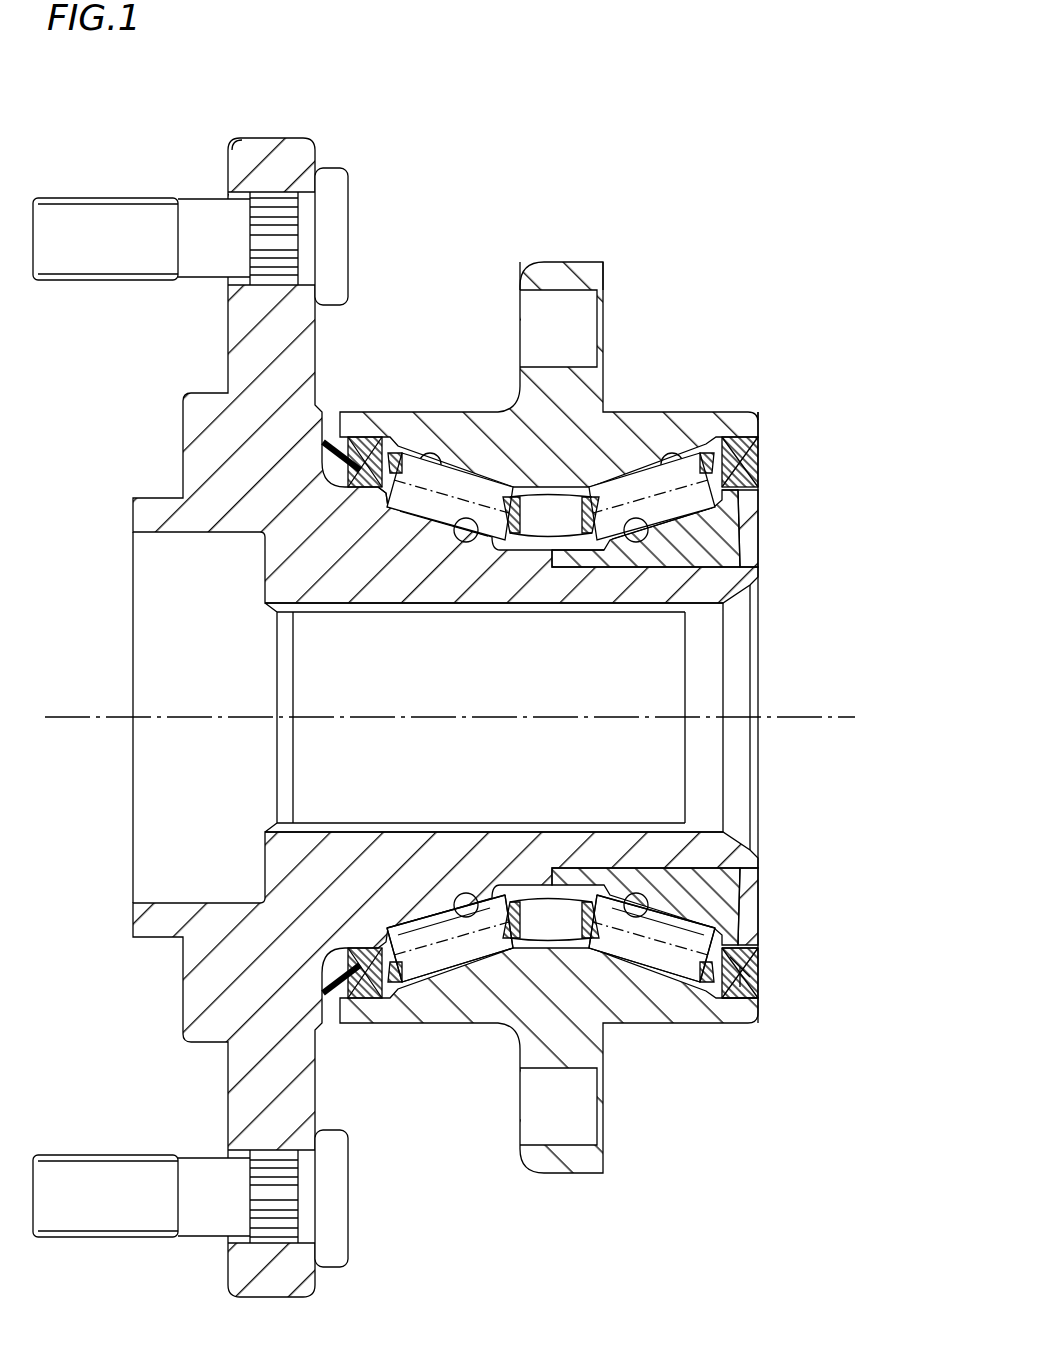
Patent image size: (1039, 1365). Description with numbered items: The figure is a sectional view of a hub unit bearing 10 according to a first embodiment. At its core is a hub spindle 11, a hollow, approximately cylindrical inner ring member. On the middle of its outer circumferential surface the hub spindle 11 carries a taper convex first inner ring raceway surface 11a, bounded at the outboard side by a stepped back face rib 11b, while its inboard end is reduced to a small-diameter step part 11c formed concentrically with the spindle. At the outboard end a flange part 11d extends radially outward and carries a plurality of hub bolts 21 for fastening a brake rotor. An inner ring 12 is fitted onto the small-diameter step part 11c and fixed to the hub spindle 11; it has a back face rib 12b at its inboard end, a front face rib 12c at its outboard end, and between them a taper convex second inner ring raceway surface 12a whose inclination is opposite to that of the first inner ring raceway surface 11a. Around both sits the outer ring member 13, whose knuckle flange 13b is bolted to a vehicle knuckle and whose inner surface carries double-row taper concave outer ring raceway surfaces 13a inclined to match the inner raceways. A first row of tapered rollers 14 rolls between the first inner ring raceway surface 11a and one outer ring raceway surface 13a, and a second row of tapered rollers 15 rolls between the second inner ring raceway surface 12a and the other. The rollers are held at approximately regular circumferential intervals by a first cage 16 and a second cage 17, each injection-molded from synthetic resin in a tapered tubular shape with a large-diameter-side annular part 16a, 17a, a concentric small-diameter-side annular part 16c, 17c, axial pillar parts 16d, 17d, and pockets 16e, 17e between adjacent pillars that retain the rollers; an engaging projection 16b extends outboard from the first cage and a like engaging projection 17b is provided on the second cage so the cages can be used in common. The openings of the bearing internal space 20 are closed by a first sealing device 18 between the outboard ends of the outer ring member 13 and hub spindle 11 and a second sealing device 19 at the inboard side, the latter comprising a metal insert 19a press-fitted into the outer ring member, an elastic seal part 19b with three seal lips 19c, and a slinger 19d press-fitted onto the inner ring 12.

The hub unit bearing 10 is at (766, 125).
The hub spindle 11 is at (178, 418).
The first inner ring raceway surface 11a is at (455, 550).
The back face rib 11b is at (370, 515).
The small-diameter step part 11c is at (742, 545).
The flange part 11d is at (260, 155).
The inner ring 12 is at (668, 580).
The second inner ring raceway surface 12a is at (634, 540).
The back face rib 12b is at (724, 495).
The front face rib 12c is at (578, 556).
The outer ring member 13 is at (563, 252).
The outer ring raceway surfaces 13a is at (428, 455).
The knuckle flange 13b is at (578, 262).
The first row of tapered rollers 14 is at (468, 490).
The second row of tapered rollers 15 is at (636, 490).
The first cage 16 is at (440, 985).
The large-diameter-side annular part 16a is at (430, 968).
The engaging projection 16b is at (388, 962).
The small-diameter-side annular part 16c is at (500, 882).
The pillar parts 16d is at (476, 988).
The pockets 16e is at (486, 958).
The second cage 17 is at (648, 985).
The large-diameter-side annular part 17a is at (706, 968).
The engaging projection 17b is at (716, 985).
The small-diameter-side annular part 17c is at (600, 882).
The pillar parts 17d is at (660, 975).
The pockets 17e is at (618, 960).
The first sealing device 18 is at (362, 432).
The second sealing device 19 is at (772, 975).
The metal insert 19a is at (760, 1000).
The elastic seal part 19b is at (760, 987).
The seal lips 19c is at (760, 972).
The slinger 19d is at (760, 960).
The bearing internal space 20 is at (552, 914).
The hub bolts 21 is at (103, 228).